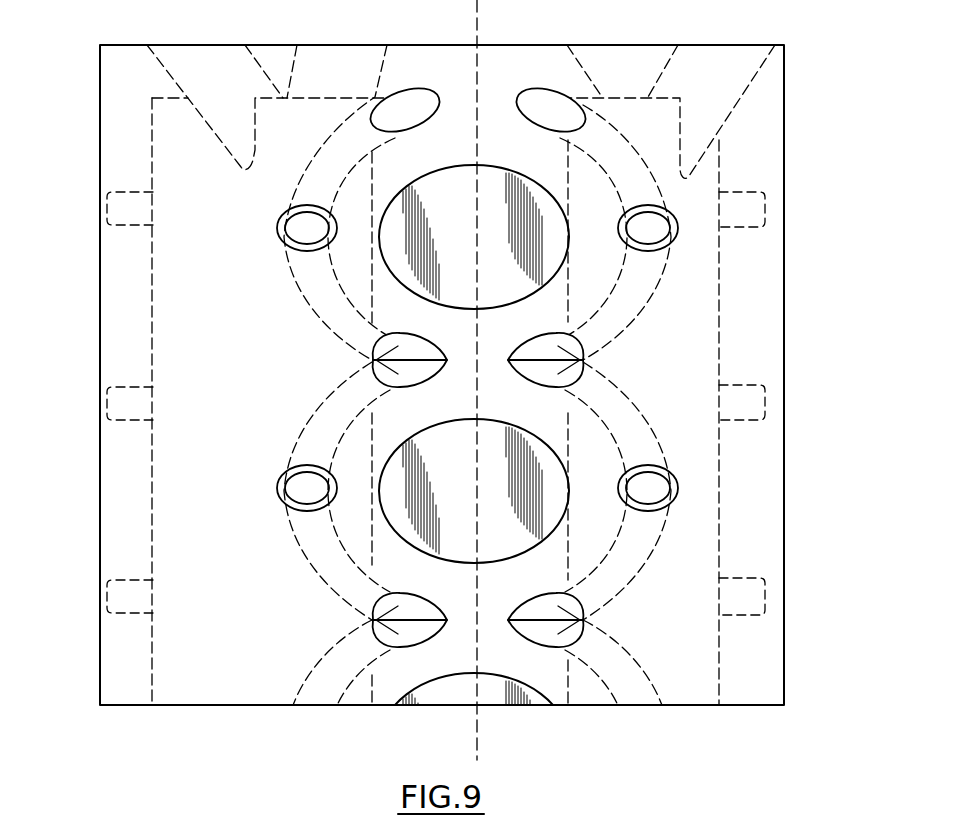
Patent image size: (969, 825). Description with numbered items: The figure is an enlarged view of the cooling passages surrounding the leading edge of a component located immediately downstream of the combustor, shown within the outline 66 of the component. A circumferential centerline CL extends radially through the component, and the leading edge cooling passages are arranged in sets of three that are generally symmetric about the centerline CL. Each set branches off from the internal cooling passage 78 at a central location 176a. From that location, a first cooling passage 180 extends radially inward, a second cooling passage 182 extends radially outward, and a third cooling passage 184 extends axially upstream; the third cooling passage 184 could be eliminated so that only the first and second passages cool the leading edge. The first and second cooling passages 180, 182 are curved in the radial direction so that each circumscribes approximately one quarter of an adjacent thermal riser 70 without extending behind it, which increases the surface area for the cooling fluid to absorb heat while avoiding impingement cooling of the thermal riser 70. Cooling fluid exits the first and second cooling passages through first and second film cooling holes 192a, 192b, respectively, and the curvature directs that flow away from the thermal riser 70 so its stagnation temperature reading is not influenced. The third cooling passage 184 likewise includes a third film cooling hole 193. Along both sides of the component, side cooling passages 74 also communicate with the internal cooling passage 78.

The heat shield panel 66 is at (617, 45).
The thermal riser 70 is at (488, 251).
The side cooling passage 74 is at (107, 213).
The internal cooling passage 78 is at (242, 687).
The central location 176a is at (283, 208).
The first cooling passage 180 is at (563, 131).
The second cooling passage 182 is at (551, 335).
The third cooling passage 184 is at (298, 228).
The first film cooling hole 192a is at (390, 114).
The second film cooling hole 192b is at (372, 364).
The third film cooling hole 193 is at (294, 231).
The circumferential centerline CL is at (480, 742).